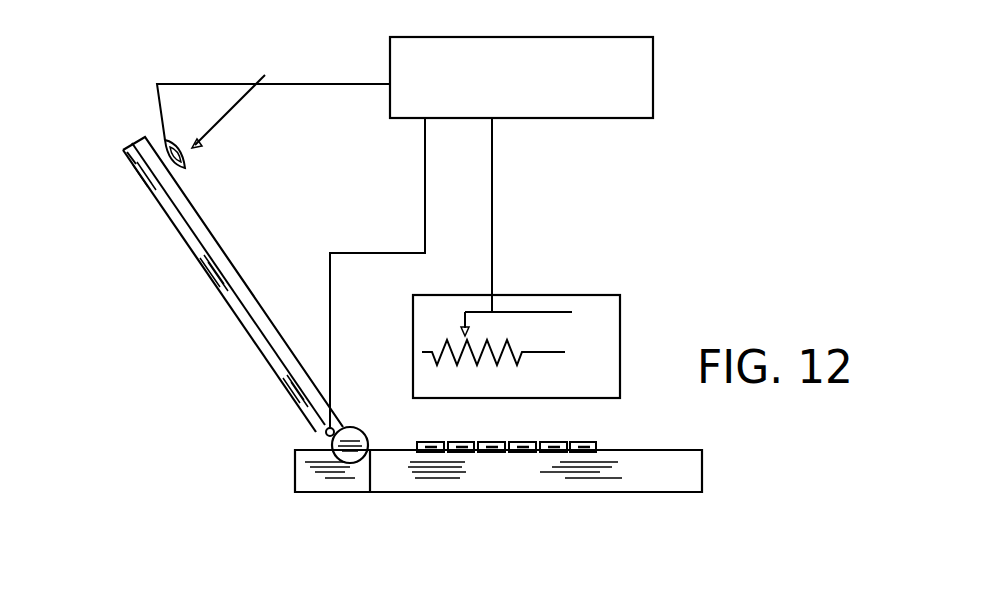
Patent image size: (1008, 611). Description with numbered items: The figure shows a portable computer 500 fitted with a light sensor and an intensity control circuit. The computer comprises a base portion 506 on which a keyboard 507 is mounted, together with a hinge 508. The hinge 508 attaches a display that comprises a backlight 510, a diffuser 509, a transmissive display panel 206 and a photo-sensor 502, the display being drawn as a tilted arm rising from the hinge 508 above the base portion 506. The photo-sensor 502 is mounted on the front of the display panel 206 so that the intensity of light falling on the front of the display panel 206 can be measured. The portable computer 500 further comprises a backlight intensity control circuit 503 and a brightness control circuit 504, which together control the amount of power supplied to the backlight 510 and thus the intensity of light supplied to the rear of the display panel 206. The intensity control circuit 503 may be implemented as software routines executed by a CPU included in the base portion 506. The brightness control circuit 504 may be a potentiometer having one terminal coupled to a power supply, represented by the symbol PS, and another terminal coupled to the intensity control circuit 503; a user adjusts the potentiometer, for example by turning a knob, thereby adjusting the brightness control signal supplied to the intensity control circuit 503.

The portable computer 500 is at (731, 117).
The backlight intensity control circuit 503 is at (556, 37).
The brightness control circuit 504 is at (580, 295).
The transmissive display panel 206 is at (145, 137).
The diffuser 509 is at (126, 156).
The photo-sensor 502 is at (185, 168).
The backlight 510 is at (325, 432).
The hinge 508 is at (366, 432).
The base portion 506 is at (552, 492).
The keyboard 507 is at (547, 442).